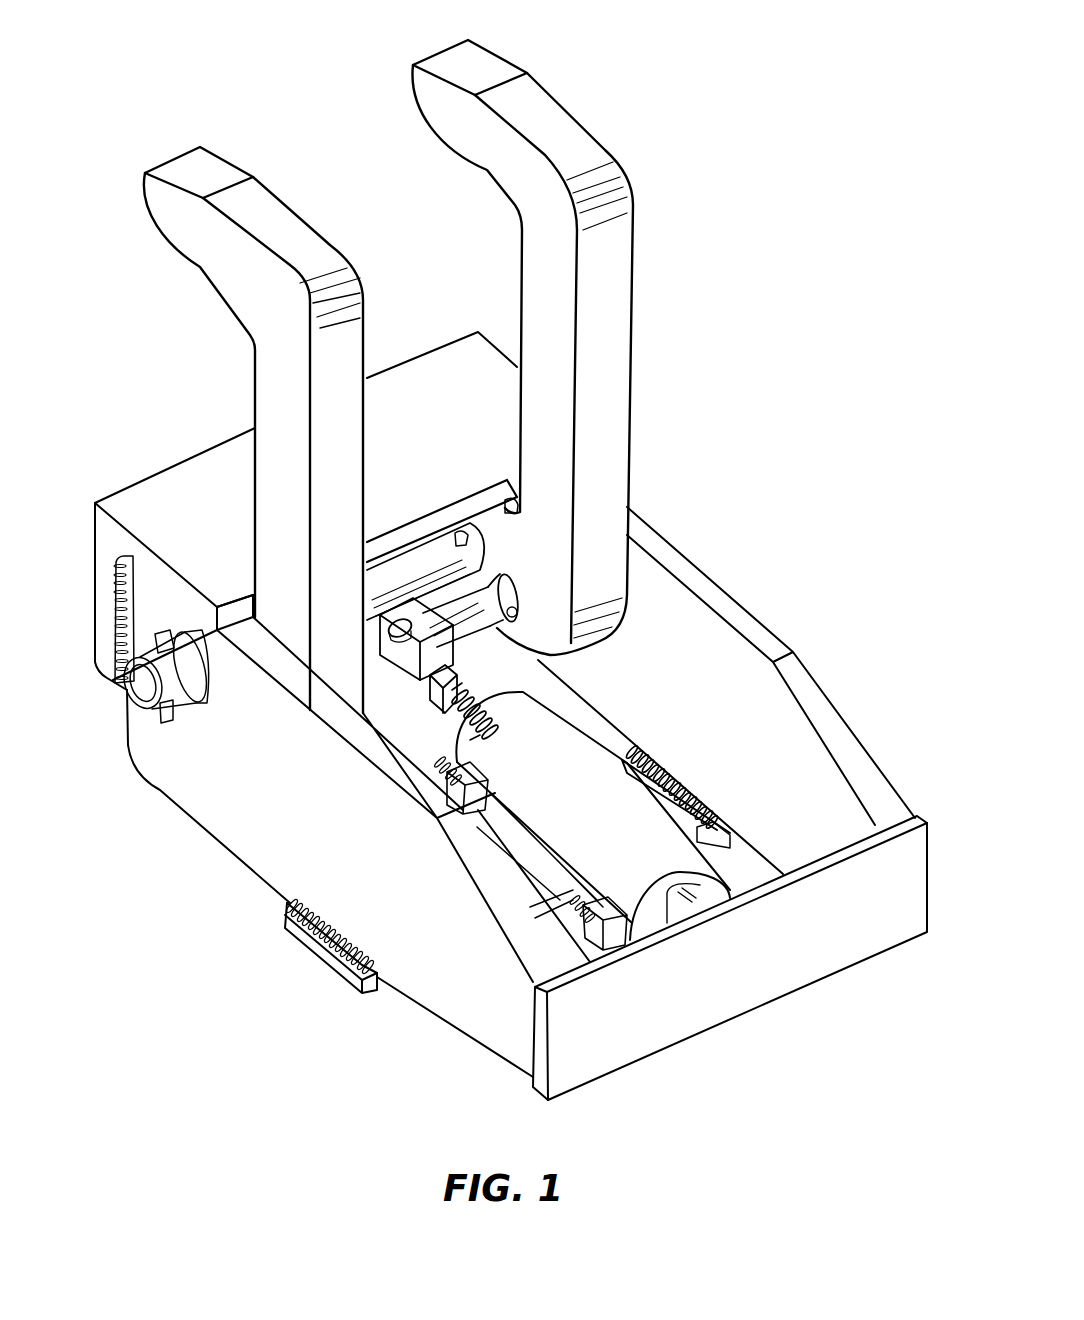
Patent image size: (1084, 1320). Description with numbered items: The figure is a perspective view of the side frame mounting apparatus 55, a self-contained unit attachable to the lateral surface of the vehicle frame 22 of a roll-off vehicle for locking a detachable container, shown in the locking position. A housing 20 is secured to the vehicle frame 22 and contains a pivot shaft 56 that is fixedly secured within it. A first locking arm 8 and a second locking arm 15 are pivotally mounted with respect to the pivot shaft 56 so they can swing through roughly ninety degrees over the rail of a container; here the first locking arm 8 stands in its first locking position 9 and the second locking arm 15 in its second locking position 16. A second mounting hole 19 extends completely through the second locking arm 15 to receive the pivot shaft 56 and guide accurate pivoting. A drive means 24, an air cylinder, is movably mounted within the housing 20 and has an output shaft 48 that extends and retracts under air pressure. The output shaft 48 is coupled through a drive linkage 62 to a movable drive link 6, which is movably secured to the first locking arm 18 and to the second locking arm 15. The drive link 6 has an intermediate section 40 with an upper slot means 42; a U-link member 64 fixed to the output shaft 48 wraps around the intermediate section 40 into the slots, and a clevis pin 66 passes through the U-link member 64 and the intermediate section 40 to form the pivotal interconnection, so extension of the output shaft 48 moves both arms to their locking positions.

The movable drive link 6 is at (470, 640).
The first locking arm 8 is at (362, 288).
The first locking position 9 is at (200, 270).
The second locking arm 15 is at (636, 205).
The second locking position 16 is at (633, 345).
The first locking arm 18 is at (513, 613).
The second mounting hole 19 is at (500, 545).
The housing 20 is at (830, 708).
The vehicle frame 22 is at (93, 503).
The drive means 24 is at (563, 821).
The intermediate section 40 is at (420, 702).
The upper slot means 42 is at (423, 623).
The output shaft 48 is at (470, 692).
The side frame mounting apparatus 55 is at (237, 860).
The pivot shaft 56 is at (138, 683).
The drive linkage 62 is at (362, 666).
The U-link member 64 is at (380, 663).
The clevis pin 66 is at (392, 626).